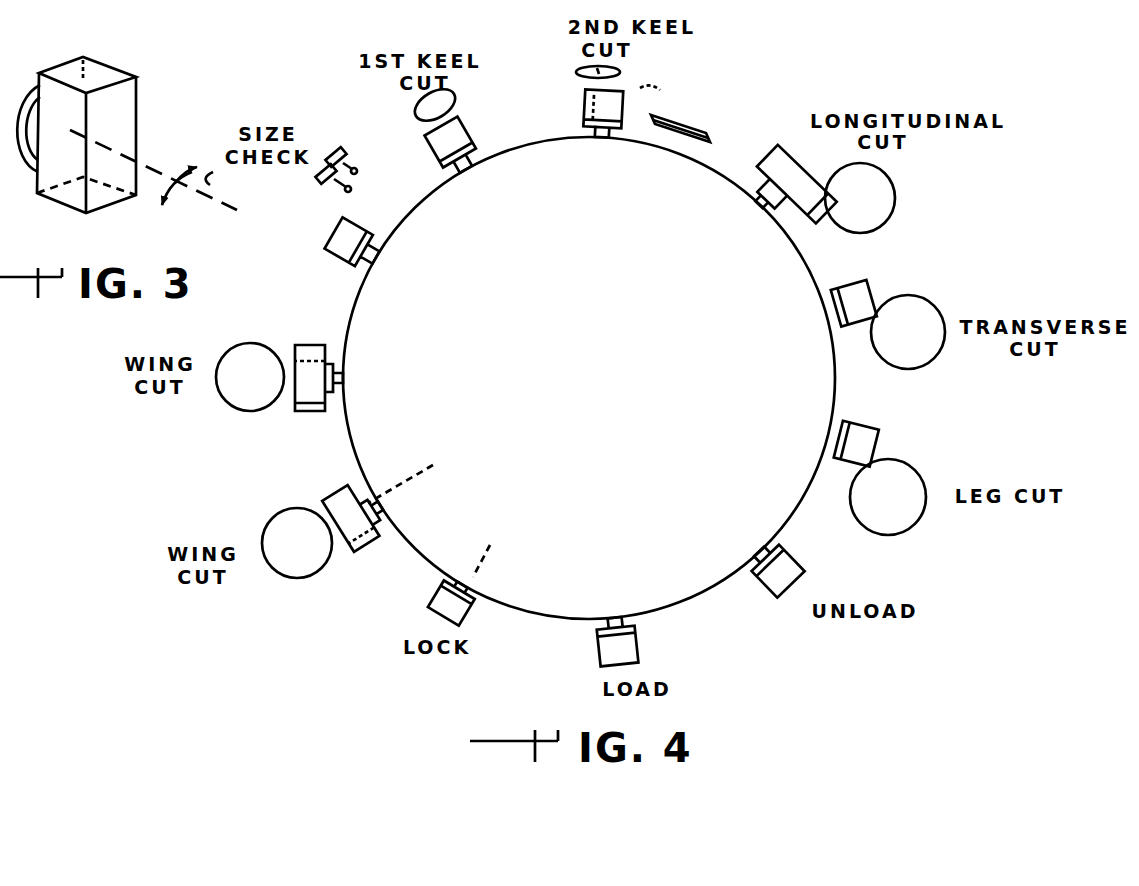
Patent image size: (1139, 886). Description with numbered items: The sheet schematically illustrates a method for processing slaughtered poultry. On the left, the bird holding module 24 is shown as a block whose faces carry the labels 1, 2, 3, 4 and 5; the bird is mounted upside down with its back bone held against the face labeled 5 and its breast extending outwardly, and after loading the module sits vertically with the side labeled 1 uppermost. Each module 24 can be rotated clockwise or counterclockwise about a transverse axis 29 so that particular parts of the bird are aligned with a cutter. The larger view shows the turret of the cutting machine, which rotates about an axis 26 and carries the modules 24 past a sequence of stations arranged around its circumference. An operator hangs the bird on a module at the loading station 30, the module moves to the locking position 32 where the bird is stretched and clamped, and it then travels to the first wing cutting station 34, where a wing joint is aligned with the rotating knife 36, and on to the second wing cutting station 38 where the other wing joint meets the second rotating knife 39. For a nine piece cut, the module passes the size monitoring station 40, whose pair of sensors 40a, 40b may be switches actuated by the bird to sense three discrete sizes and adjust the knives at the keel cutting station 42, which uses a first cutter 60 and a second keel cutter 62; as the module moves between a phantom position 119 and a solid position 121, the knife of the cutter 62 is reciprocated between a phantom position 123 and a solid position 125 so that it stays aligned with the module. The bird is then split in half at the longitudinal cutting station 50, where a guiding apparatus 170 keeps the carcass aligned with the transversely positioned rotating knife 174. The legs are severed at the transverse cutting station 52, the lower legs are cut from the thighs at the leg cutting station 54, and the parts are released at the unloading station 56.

In FIG. 3, the holding module 24 is at (118, 54).
In FIG. 4, the holding module 24 is at (352, 268).
In FIG. 4, the axis 26 is at (590, 381).
In FIG. 3, the transverse axis 29 is at (159, 170).
In FIG. 4, the transverse axis 29 is at (400, 480).
In FIG. 4, the loading station 30 is at (618, 600).
In FIG. 4, the locking position 32 is at (460, 548).
In FIG. 4, the first wing cutting station 34 is at (390, 510).
In FIG. 4, the knife 36 is at (290, 585).
In FIG. 4, the second wing cutting station 38 is at (358, 378).
In FIG. 4, the second rotating knife 39 is at (242, 410).
In FIG. 4, the size monitoring station 40 is at (330, 130).
In FIG. 4, the sensor 40a is at (345, 143).
In FIG. 4, the sensor 40b is at (320, 177).
In FIG. 4, the keel cutting station 42 is at (530, 148).
In FIG. 4, the longitudinal cutting station 50 is at (782, 243).
In FIG. 4, the transverse cutting station 52 is at (820, 328).
In FIG. 4, the leg cutting station 54 is at (812, 432).
In FIG. 4, the unloading station 56 is at (756, 525).
In FIG. 4, the first cutter 60 is at (470, 95).
In FIG. 4, the second keel cutter 62 is at (655, 90).
In FIG. 4, the position 119 is at (582, 118).
In FIG. 4, the position 121 is at (640, 86).
In FIG. 4, the position 123 is at (580, 70).
In FIG. 4, the position 125 is at (615, 68).
In FIG. 4, the guiding apparatus 170 is at (703, 115).
In FIG. 4, the rotating knife 174 is at (896, 198).
In FIG. 3, the side labeled 1 is at (85, 86).
In FIG. 4, the side labeled 1 is at (455, 616).
In FIG. 3, the face labeled 2 is at (93, 192).
In FIG. 4, the face labeled 2 is at (308, 408).
In FIG. 3, the face labeled 3 is at (51, 146).
In FIG. 4, the face labeled 3 is at (306, 386).
In FIG. 3, the face labeled 4 is at (110, 133).
In FIG. 4, the face labeled 4 is at (344, 523).
In FIG. 3, the face labeled 5 is at (105, 161).
In FIG. 4, the face labeled 5 is at (298, 348).